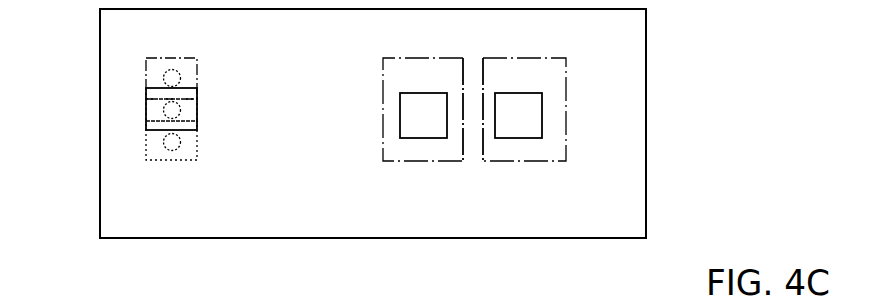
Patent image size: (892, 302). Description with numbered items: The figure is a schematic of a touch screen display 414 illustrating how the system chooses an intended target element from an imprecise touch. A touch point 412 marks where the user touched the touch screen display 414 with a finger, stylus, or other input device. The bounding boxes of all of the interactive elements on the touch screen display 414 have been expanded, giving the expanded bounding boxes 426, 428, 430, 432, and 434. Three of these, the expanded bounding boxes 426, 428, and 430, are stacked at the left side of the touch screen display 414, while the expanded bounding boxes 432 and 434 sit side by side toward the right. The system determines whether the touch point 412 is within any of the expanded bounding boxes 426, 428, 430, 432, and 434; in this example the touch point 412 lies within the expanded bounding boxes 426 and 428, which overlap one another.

The touch screen display 414 is at (646, 75).
The expanded bounding box 426 is at (141, 65).
The touch point 412 is at (157, 94).
The expanded bounding box 428 is at (141, 112).
The expanded bounding box 430 is at (143, 145).
The expanded bounding box 432 is at (427, 57).
The expanded bounding box 434 is at (523, 57).